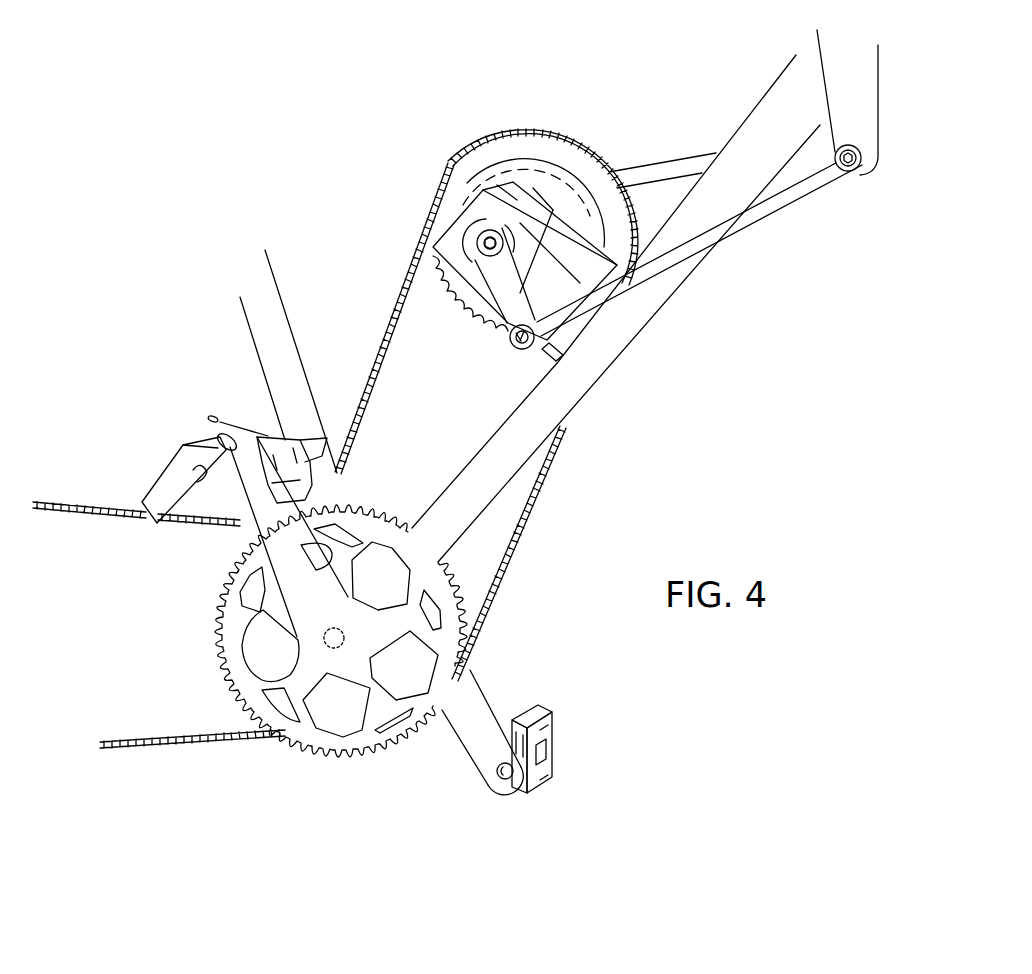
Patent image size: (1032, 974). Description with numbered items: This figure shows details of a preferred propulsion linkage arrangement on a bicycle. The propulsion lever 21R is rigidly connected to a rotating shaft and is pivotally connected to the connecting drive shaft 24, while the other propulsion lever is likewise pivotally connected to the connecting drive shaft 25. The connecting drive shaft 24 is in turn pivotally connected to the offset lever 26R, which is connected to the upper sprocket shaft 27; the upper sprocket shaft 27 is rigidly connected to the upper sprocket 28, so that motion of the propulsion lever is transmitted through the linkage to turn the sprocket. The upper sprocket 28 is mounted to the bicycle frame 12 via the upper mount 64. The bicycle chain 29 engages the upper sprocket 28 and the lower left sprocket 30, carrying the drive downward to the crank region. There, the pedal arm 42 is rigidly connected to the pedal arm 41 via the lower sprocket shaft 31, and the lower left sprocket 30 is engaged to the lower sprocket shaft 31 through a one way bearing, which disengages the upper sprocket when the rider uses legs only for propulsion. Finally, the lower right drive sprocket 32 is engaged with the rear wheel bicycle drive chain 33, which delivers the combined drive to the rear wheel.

The bicycle frame 12 is at (680, 338).
The propulsion lever 21R is at (881, 78).
The connecting drive shaft 24 is at (750, 228).
The connecting drive shaft 25 is at (663, 157).
The offset lever 26R is at (600, 247).
The upper sprocket shaft 27 is at (478, 250).
The upper sprocket 28 is at (523, 157).
The bicycle chain 29 is at (385, 333).
The lower left sprocket 30 is at (412, 508).
The lower sprocket shaft 31 is at (338, 648).
The lower right drive sprocket 32 is at (316, 748).
The rear wheel bicycle drive chain 33 is at (78, 502).
The pedal arm 41 is at (242, 512).
The pedal arm 42 is at (483, 690).
The upper mount 64 is at (562, 362).